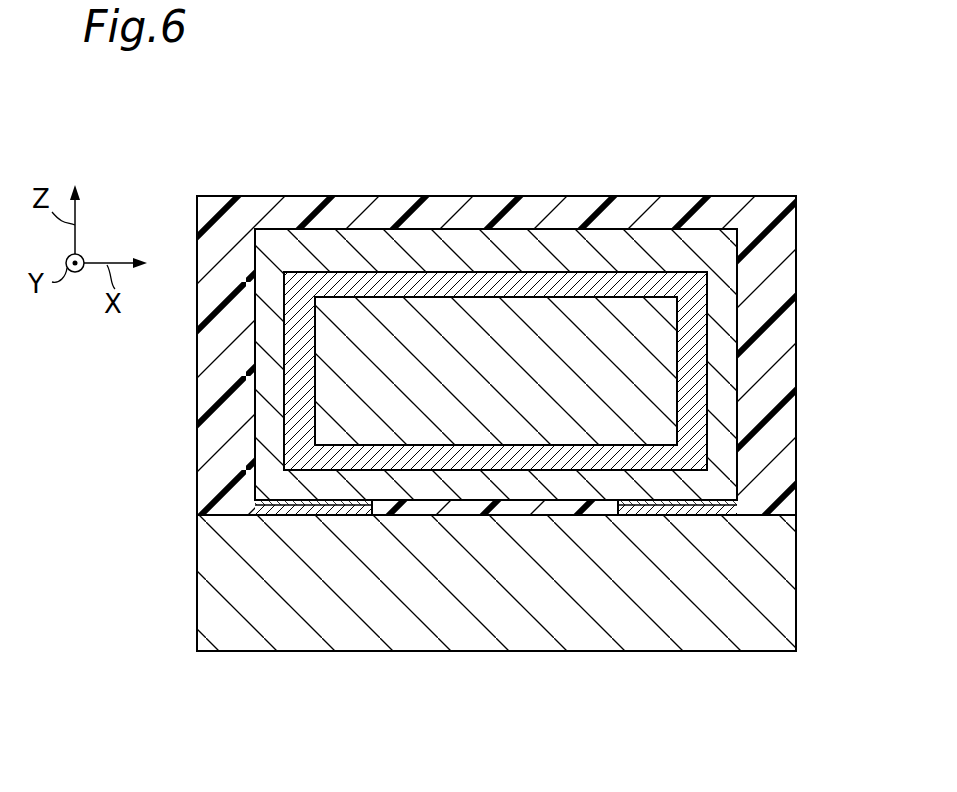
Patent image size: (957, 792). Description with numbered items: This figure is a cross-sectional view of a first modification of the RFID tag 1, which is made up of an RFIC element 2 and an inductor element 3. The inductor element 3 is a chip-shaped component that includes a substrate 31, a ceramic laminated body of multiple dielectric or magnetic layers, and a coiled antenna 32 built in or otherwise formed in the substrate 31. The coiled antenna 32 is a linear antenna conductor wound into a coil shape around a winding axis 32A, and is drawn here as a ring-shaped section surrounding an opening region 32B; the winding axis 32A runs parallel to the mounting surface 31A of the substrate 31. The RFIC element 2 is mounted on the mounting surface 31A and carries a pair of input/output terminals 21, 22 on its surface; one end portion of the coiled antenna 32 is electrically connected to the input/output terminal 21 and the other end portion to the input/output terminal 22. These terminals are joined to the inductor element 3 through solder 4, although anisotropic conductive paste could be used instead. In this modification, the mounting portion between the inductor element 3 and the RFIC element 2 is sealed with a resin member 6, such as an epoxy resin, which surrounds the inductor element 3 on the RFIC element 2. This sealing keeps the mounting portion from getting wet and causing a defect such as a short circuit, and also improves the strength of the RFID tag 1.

The RFID tag 1 is at (244, 160).
The RFIC element 2 is at (728, 638).
The inductor element 3 is at (758, 142).
The solder 4 is at (275, 502).
The resin member 6 is at (777, 257).
The input/output terminal 21 is at (272, 510).
The input/output terminal 22 is at (722, 513).
The substrate 31 is at (722, 270).
The mounting surface 31A is at (500, 500).
The coiled antenna 32 is at (660, 287).
The winding axis 32A is at (495, 371).
The opening region 32B is at (397, 314).